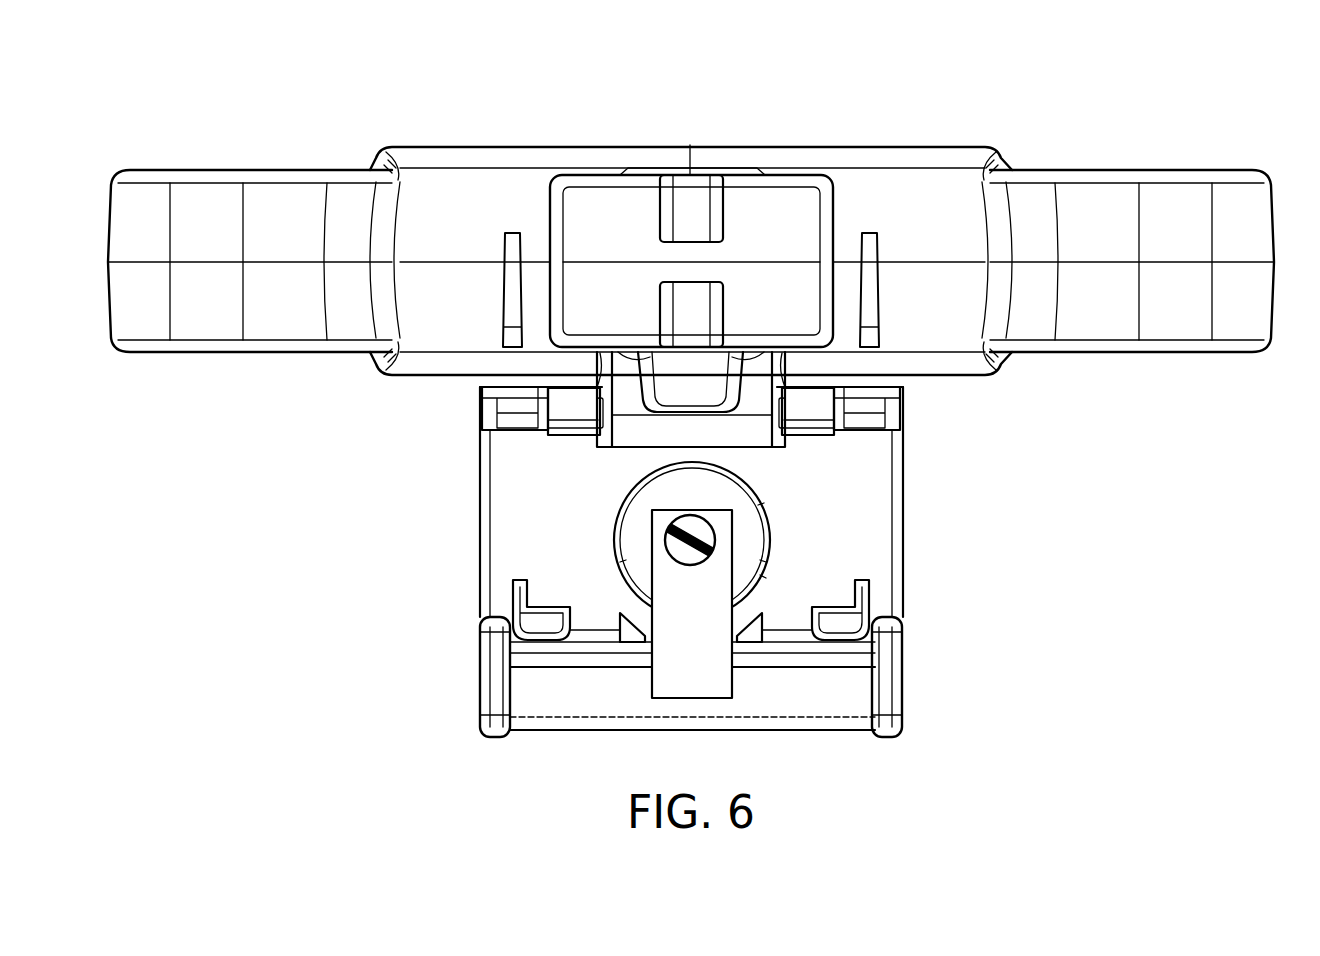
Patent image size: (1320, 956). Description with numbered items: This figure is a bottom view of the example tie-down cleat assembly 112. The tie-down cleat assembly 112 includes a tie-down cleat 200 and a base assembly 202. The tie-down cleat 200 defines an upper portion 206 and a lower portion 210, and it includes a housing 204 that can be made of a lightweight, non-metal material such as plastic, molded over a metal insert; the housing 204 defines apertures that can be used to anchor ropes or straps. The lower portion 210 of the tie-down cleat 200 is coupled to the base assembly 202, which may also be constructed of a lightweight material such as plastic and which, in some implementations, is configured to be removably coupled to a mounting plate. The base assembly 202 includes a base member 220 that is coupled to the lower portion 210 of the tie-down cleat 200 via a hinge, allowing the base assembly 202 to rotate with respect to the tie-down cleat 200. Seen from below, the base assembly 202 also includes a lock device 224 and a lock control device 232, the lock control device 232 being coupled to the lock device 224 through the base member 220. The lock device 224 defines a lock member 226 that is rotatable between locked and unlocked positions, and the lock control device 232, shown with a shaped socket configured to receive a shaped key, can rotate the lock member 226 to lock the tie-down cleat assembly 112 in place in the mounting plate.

The tie-down cleat assembly 112 is at (1150, 752).
The tie-down cleat 200 is at (1132, 202).
The base assembly 202 is at (928, 630).
The housing 204 is at (1147, 170).
The upper portion 206 is at (281, 133).
The lower portion 210 is at (602, 145).
The base member 220 is at (722, 562).
The lock device 224 is at (640, 516).
The lock member 226 is at (697, 590).
The lock control device 232 is at (747, 542).